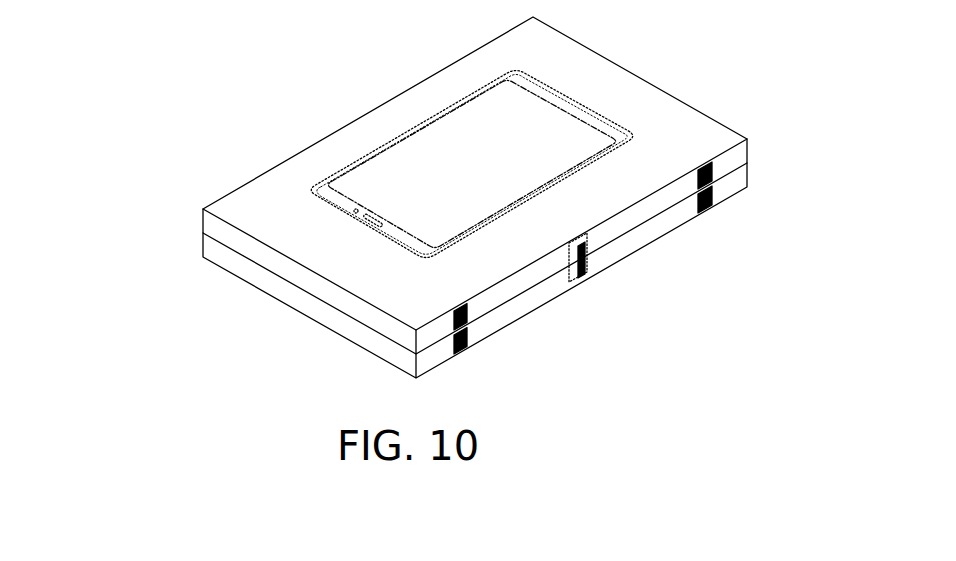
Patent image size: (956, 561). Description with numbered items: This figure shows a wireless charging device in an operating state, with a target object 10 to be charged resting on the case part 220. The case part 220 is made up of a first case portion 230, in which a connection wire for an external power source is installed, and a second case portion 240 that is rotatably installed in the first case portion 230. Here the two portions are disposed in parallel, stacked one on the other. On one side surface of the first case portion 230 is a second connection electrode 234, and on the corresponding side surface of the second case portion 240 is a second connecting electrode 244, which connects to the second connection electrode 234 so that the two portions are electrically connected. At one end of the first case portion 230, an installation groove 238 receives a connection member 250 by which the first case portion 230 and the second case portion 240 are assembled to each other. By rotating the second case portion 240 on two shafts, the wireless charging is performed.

The target object to be charged 10 is at (390, 153).
The case part 220 is at (390, 197).
The first case portion 230 is at (222, 258).
The second case portion 240 is at (237, 200).
The second connection electrode 234 is at (713, 198).
The second connecting electrode 244 is at (714, 169).
The installation groove 238 is at (581, 280).
The connection member 250 is at (589, 239).